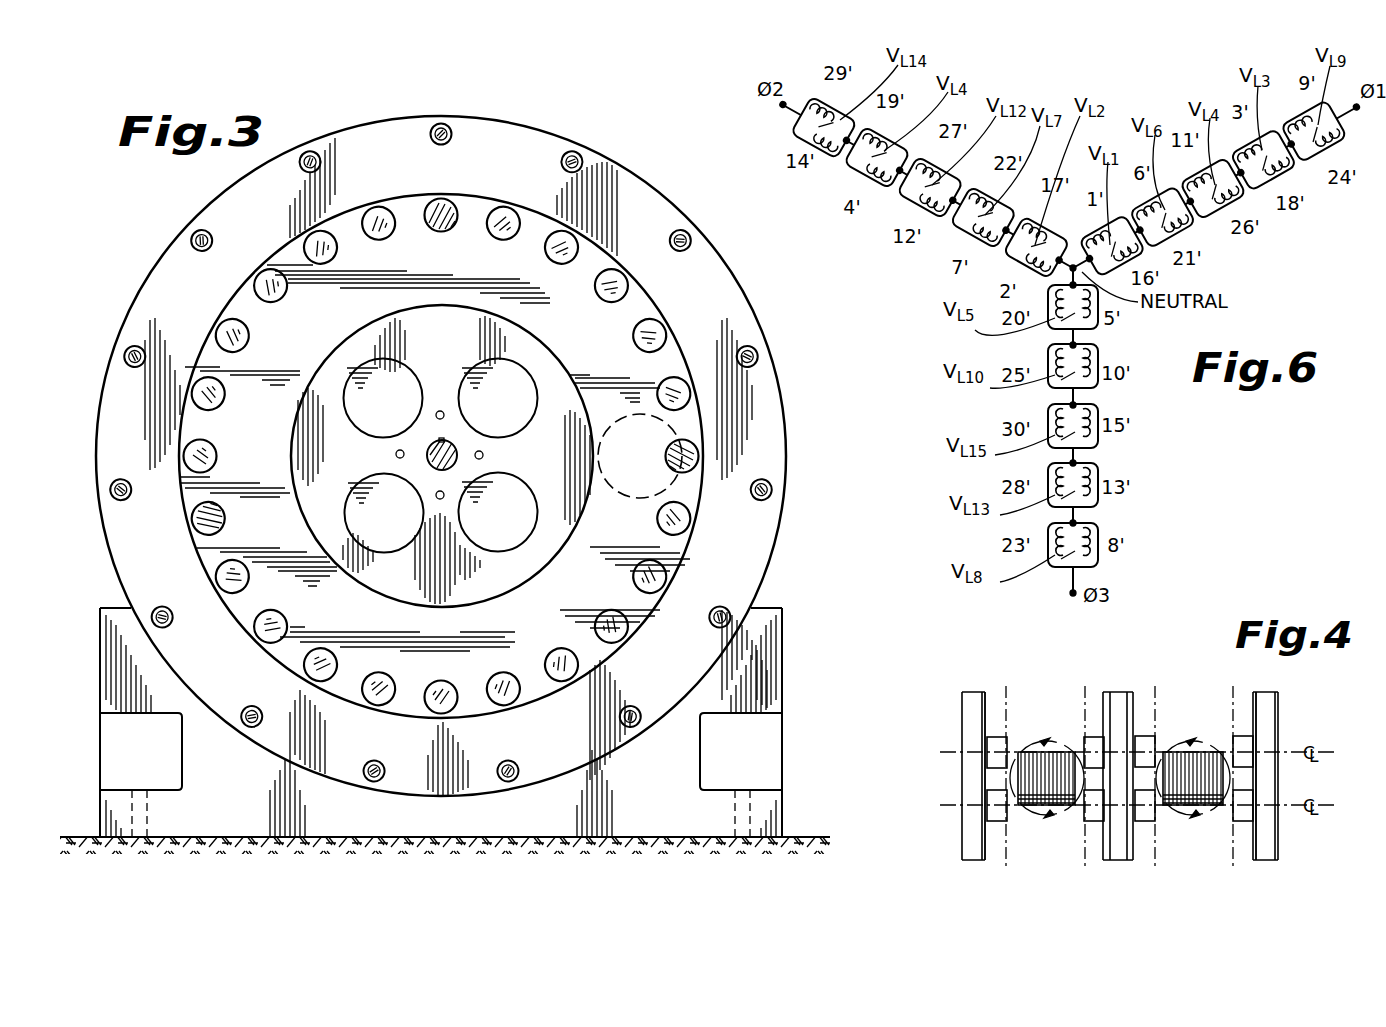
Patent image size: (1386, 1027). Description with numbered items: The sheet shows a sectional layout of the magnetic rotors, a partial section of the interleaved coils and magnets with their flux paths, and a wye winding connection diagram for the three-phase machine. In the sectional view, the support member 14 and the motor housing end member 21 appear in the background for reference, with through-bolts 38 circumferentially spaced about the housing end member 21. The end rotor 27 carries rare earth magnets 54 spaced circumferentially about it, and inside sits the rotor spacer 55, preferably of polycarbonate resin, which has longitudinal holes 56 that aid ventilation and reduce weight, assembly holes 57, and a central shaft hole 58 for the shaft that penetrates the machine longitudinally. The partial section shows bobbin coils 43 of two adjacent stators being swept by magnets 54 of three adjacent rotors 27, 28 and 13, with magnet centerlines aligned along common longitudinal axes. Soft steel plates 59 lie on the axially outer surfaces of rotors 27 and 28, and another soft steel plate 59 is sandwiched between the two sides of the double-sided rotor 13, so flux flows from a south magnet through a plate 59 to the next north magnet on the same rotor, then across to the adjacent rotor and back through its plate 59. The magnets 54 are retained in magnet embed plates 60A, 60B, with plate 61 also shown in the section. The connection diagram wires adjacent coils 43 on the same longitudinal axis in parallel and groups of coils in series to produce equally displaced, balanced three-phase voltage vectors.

In FIG. 3, the support member 14 is at (776, 656).
In FIG. 3, the motor housing end member 21 is at (786, 432).
In FIG. 3, the through-bolts 38 is at (780, 480).
In FIG. 3, the end rotor 27 is at (505, 194).
In FIG. 4, the end rotor 27 is at (1279, 720).
In FIG. 3, the rare earth magnets 54 is at (448, 208).
In FIG. 4, the rare earth magnets 54 is at (997, 737).
In FIG. 3, the rotor spacer 55 is at (550, 362).
In FIG. 3, the longitudinal holes 56 is at (505, 366).
In FIG. 3, the assembly holes 57 is at (484, 455).
In FIG. 3, the shaft hole 58 is at (441, 440).
In FIG. 4, the double-sided magnetic rotor member 13 is at (1078, 712).
In FIG. 4, the rotor 28 is at (958, 830).
In FIG. 4, the bobbin coils 43 is at (1047, 806).
In FIG. 4, the soft steel plate 59 is at (1130, 692).
In FIG. 4, the magnet embed plate 60A is at (998, 864).
In FIG. 4, the magnet embed plate 60B is at (1086, 695).
In FIG. 4, the backing plate 61 is at (962, 768).